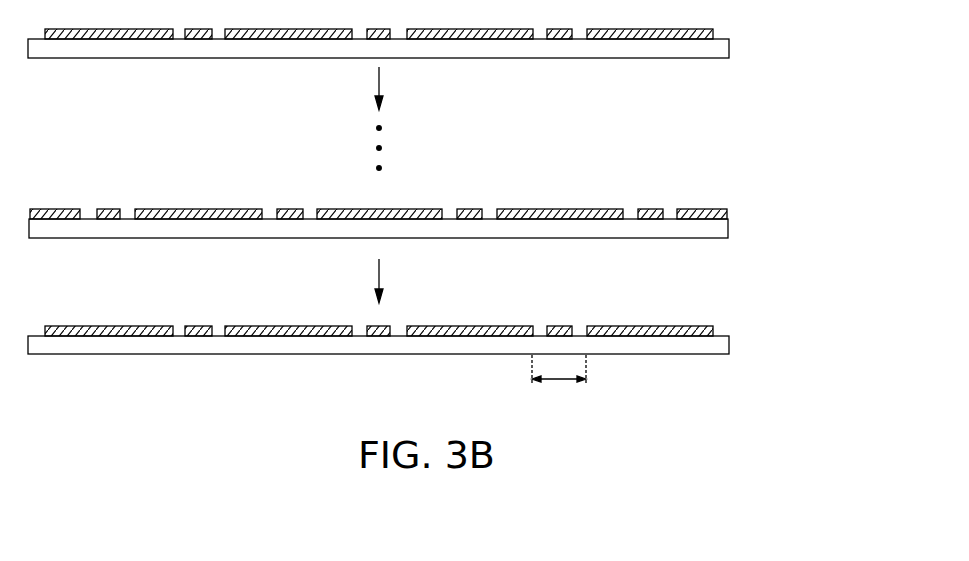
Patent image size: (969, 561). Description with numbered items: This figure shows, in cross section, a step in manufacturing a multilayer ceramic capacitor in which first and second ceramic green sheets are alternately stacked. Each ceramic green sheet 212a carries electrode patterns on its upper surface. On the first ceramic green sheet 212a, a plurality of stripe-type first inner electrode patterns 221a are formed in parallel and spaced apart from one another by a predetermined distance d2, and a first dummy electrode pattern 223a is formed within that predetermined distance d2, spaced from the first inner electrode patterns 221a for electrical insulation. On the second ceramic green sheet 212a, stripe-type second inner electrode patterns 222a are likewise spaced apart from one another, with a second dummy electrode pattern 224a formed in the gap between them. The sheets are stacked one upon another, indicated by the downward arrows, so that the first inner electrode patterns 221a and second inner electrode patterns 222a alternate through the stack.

The ceramic green sheet 212a is at (728, 229).
The stripe-type first inner electrode pattern 221a is at (713, 331).
The stripe-type second inner electrode pattern 222a is at (727, 211).
The first dummy electrode pattern 223a is at (562, 326).
The second dummy electrode pattern 224a is at (470, 209).
The predetermined distance d2 is at (559, 380).